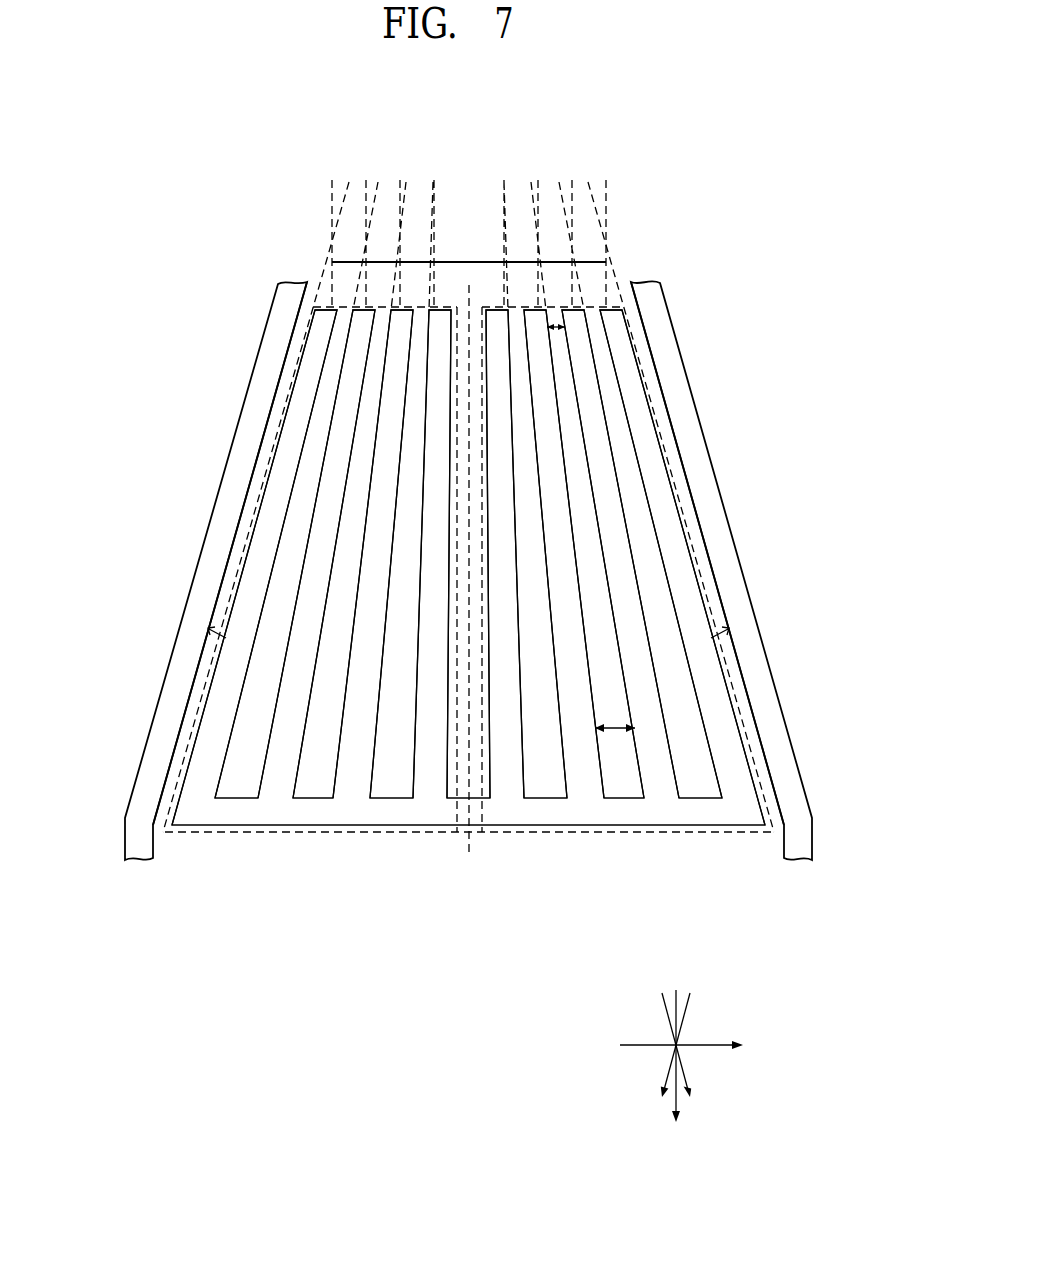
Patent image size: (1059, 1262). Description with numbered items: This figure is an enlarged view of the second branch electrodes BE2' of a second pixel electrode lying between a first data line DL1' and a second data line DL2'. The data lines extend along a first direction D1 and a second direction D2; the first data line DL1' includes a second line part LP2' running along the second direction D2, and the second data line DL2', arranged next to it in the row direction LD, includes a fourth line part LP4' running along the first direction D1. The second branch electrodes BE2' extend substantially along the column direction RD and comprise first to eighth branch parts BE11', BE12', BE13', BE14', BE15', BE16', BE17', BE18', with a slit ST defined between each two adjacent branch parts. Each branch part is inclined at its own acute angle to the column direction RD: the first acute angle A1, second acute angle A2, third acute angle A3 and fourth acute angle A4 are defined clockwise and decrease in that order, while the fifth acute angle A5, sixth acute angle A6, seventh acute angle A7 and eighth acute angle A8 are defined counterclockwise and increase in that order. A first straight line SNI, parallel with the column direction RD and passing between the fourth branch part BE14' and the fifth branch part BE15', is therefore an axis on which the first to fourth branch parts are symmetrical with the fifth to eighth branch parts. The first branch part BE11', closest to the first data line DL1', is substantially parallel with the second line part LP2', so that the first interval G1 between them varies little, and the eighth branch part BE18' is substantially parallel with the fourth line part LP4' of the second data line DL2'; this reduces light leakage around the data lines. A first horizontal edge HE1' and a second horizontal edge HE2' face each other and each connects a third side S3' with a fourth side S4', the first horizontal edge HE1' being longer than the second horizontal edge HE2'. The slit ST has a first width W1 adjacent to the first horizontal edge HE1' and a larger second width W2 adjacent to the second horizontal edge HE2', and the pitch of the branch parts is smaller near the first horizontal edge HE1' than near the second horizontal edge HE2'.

The first acute angle A1 is at (332, 204).
The second acute angle A2 is at (366, 204).
The third acute angle A3 is at (400, 204).
The fourth acute angle A4 is at (434, 204).
The fifth acute angle A5 is at (503, 204).
The sixth acute angle A6 is at (538, 204).
The seventh acute angle A7 is at (572, 204).
The eighth acute angle A8 is at (606, 204).
The first straight line SNI is at (470, 283).
The first horizontal edge HE1' is at (560, 558).
The second horizontal edge HE2' is at (485, 881).
The first width W1 is at (556, 330).
The second width W2 is at (612, 726).
The slit ST is at (364, 436).
The third side S3' is at (246, 507).
The fourth side S4' is at (692, 507).
The second line part LP2' is at (218, 553).
The fourth line part LP4' is at (719, 553).
The first interval G1 is at (214, 631).
The first data line DL1' is at (204, 606).
The second data line DL2' is at (741, 605).
The first branch part BE11' is at (254, 620).
The second branch part BE12' is at (315, 620).
The third branch part BE13' is at (372, 620).
The fourth branch part BE14' is at (430, 620).
The fifth branch part BE15' is at (500, 620).
The sixth branch part BE16' is at (564, 620).
The seventh branch part BE17' is at (620, 620).
The eighth branch part BE18' is at (682, 620).
The second branch electrodes BE2' is at (468, 643).
The row direction LD is at (696, 1047).
The column direction RD is at (678, 1105).
The first direction D1 is at (686, 1073).
The second direction D2 is at (662, 1073).